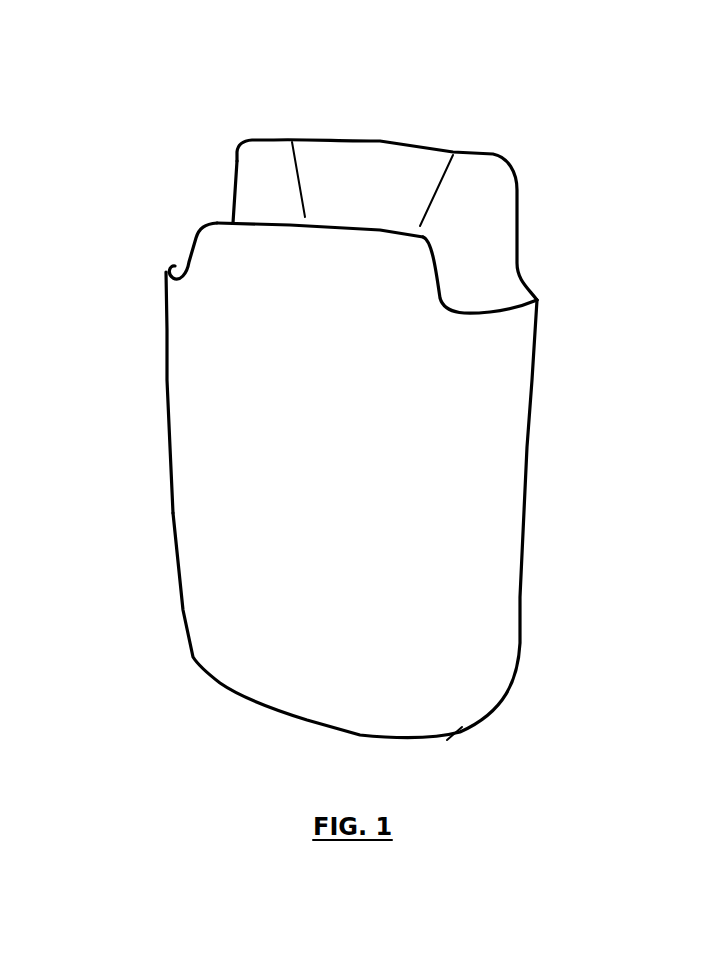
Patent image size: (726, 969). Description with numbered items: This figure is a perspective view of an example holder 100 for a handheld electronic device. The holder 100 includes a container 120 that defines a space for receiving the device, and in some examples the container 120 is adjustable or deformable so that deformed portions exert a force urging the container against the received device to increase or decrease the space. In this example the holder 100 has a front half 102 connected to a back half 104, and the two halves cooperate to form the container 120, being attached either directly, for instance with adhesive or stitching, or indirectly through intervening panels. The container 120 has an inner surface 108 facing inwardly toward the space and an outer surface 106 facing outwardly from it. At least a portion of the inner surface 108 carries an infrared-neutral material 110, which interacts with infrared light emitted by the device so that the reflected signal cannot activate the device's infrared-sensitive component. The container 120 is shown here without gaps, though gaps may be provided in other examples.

The holder 100 is at (386, 407).
The front half 102 is at (433, 260).
The back half 104 is at (498, 157).
The outer surface 106 is at (183, 333).
The inner surface 108 is at (250, 214).
The infrared-neutral material 110 is at (377, 173).
The container 120 is at (482, 518).